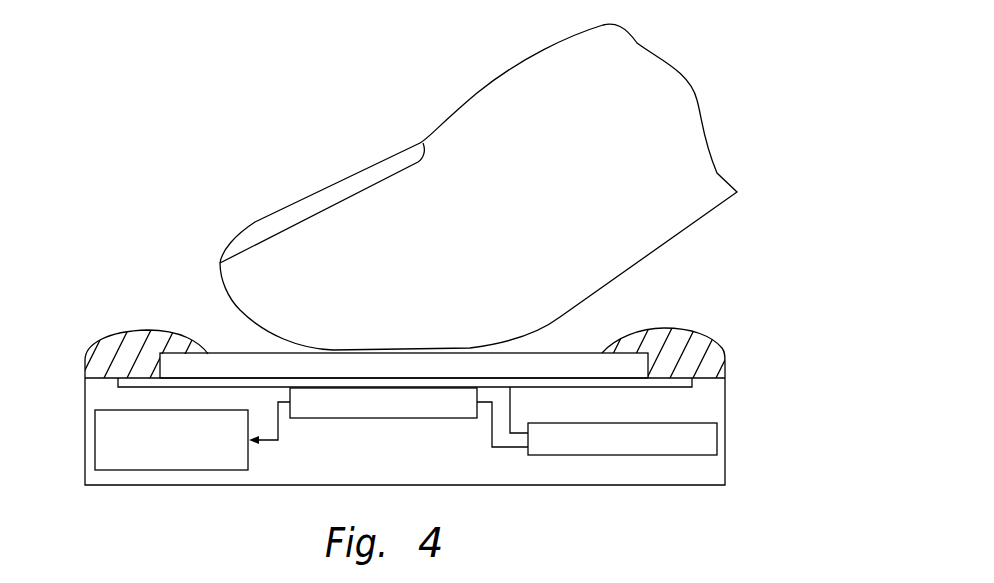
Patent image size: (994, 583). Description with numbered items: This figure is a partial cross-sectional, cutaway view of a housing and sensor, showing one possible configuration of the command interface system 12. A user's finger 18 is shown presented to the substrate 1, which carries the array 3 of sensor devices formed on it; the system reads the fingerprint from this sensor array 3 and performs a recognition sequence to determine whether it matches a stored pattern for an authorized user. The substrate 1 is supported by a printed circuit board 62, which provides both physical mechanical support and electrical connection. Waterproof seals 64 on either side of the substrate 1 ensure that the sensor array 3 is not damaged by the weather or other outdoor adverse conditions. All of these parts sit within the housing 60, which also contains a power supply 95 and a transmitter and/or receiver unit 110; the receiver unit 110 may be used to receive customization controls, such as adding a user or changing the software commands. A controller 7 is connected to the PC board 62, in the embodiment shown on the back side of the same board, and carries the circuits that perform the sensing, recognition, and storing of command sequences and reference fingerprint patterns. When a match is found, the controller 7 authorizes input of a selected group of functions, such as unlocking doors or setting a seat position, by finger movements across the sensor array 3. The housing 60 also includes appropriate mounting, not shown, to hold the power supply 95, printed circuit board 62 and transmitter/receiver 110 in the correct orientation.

The substrate 1 is at (635, 363).
The array of sensor devices 3 is at (253, 365).
The controller 7 is at (453, 410).
The command interface system 12 is at (450, 413).
The finger 18 is at (478, 93).
The housing 60 is at (687, 470).
The printed circuit board 62 is at (674, 384).
The waterproof seals 64 is at (125, 342).
The power supply 95 is at (707, 438).
The transmitter and/or receiver unit 110 is at (103, 442).